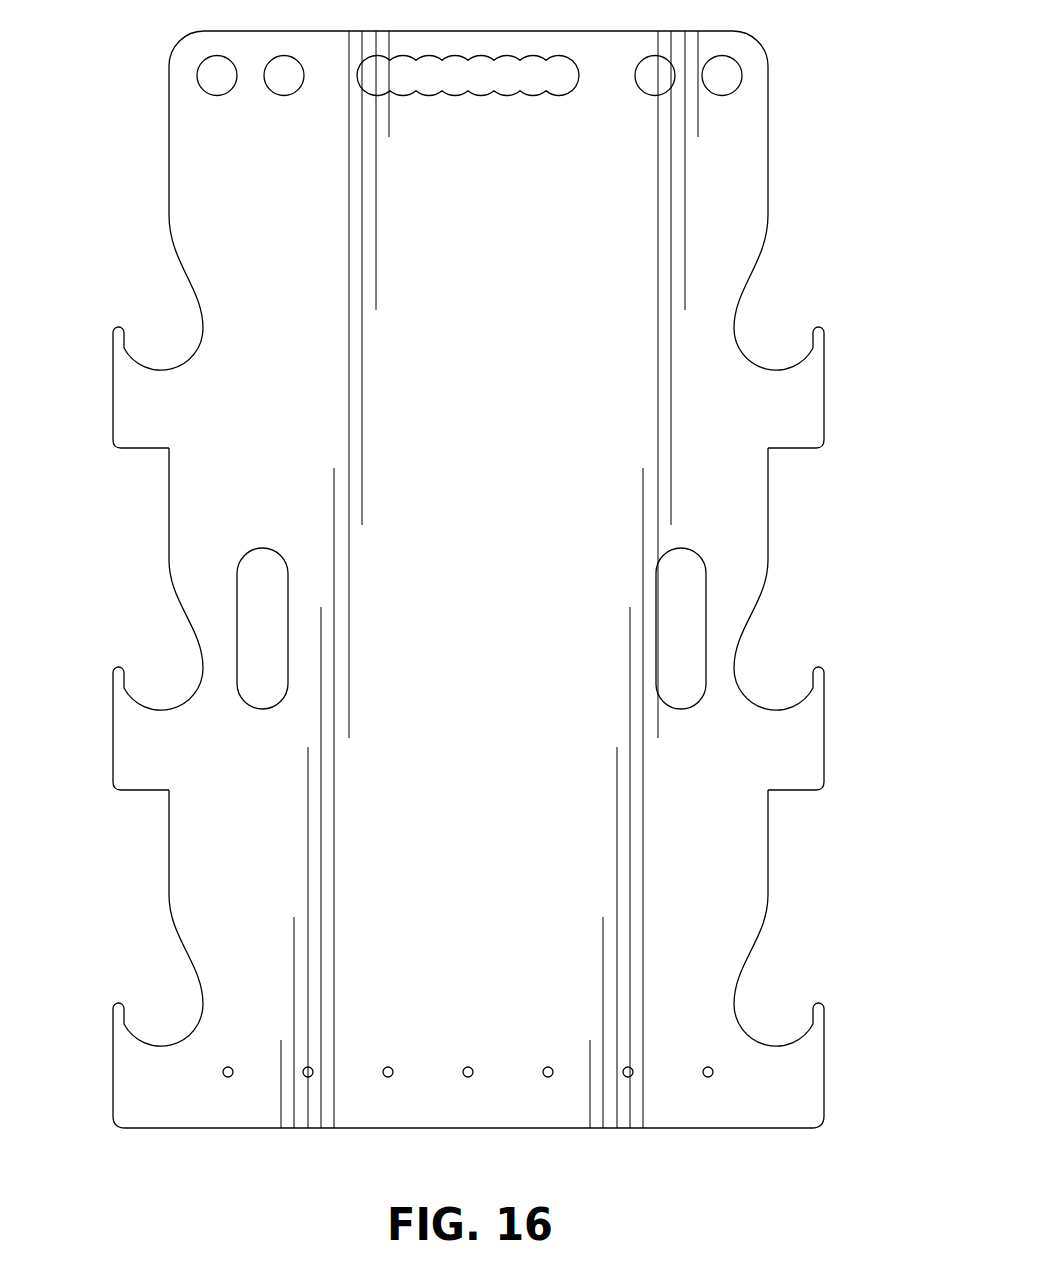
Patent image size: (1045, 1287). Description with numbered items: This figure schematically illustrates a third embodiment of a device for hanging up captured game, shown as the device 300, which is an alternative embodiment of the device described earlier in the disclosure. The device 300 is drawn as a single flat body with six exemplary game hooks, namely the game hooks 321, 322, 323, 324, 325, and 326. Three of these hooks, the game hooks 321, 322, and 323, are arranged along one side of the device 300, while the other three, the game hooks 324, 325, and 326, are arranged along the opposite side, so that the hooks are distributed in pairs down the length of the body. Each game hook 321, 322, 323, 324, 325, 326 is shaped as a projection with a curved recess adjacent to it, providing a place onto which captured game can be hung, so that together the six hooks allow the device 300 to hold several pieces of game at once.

The device 300 is at (768, 137).
The game hook 321 is at (825, 337).
The game hook 322 is at (825, 677).
The game hook 323 is at (825, 1012).
The game hook 324 is at (113, 348).
The game hook 325 is at (113, 688).
The game hook 326 is at (113, 1017).